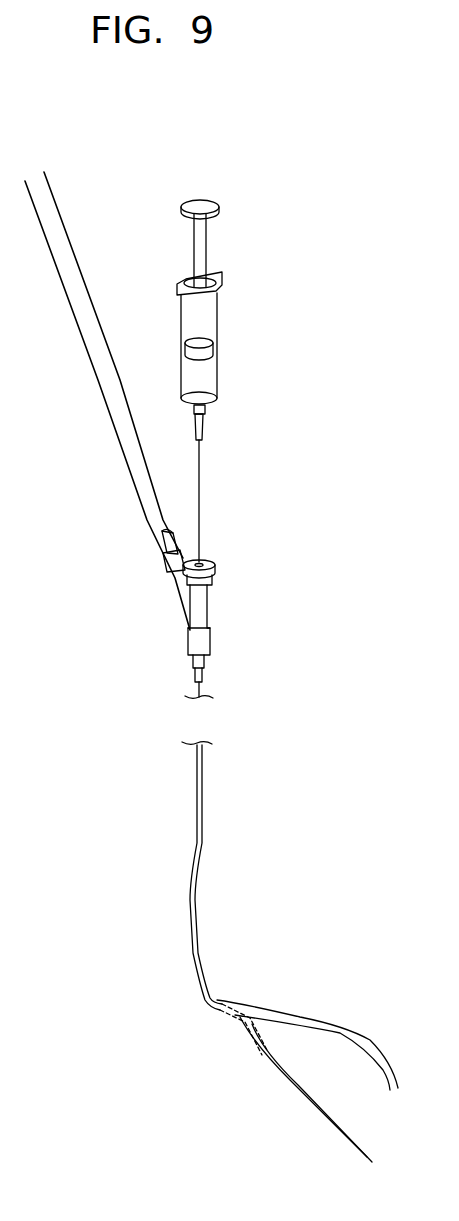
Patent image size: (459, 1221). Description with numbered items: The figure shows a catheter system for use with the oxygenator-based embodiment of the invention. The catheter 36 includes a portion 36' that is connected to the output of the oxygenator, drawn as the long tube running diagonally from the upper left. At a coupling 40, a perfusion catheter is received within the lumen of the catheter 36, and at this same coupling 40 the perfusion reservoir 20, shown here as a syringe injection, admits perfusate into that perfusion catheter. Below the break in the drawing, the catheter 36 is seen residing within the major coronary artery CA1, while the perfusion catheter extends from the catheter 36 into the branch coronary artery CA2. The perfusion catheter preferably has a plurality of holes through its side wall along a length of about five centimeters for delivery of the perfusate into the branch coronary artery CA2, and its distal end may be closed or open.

The perfusion reservoir 20 is at (223, 318).
The catheter 36 is at (224, 898).
The portion of catheter 36' is at (107, 401).
The coupling 40 is at (210, 621).
The major coronary artery CA1 is at (340, 1025).
The branch coronary artery CA2 is at (285, 1088).